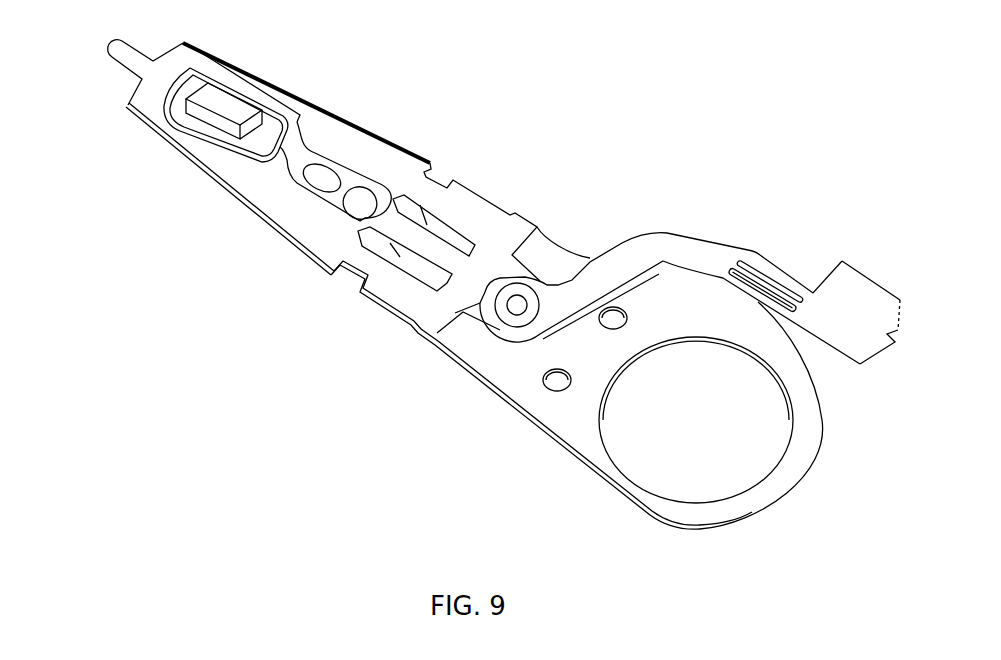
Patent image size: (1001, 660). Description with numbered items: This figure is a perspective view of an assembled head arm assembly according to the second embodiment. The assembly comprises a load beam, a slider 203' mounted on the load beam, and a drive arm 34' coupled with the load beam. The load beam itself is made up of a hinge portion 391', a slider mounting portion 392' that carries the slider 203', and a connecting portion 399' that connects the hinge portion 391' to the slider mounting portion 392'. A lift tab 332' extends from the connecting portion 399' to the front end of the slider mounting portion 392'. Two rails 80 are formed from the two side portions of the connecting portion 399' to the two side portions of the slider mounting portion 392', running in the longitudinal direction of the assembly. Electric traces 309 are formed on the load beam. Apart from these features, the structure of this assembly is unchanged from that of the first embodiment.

The drive arm 34' is at (605, 415).
The rails 80 is at (300, 250).
The slider 203' is at (293, 77).
The electric traces 309 is at (285, 173).
The lift tab 332' is at (105, 108).
The hinge portion 391' is at (395, 309).
The slider mounting portion 392' is at (195, 154).
The connecting portion 399' is at (386, 162).